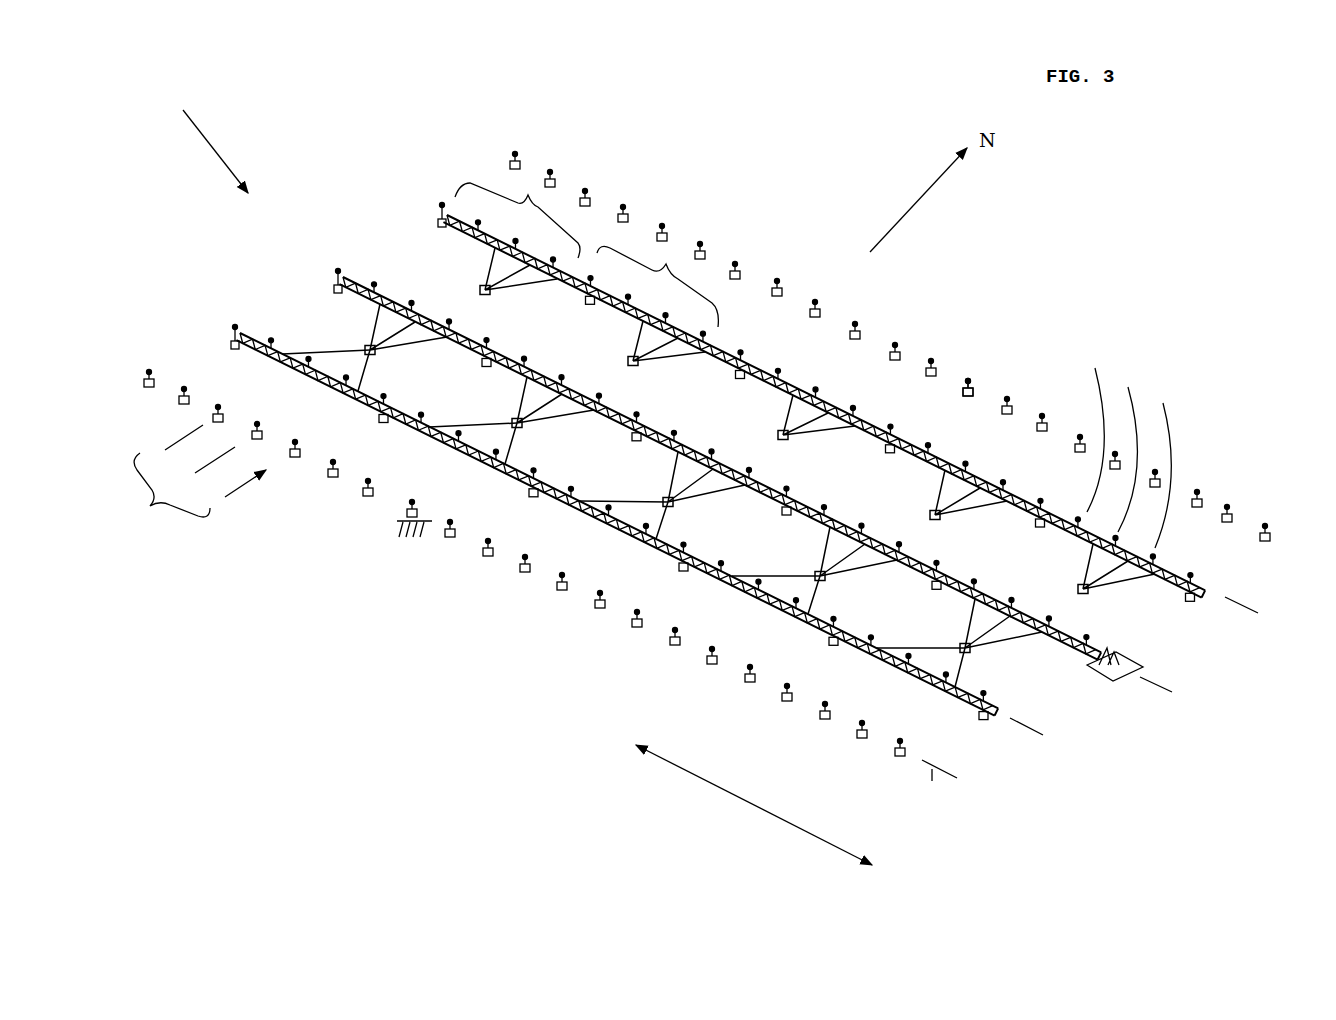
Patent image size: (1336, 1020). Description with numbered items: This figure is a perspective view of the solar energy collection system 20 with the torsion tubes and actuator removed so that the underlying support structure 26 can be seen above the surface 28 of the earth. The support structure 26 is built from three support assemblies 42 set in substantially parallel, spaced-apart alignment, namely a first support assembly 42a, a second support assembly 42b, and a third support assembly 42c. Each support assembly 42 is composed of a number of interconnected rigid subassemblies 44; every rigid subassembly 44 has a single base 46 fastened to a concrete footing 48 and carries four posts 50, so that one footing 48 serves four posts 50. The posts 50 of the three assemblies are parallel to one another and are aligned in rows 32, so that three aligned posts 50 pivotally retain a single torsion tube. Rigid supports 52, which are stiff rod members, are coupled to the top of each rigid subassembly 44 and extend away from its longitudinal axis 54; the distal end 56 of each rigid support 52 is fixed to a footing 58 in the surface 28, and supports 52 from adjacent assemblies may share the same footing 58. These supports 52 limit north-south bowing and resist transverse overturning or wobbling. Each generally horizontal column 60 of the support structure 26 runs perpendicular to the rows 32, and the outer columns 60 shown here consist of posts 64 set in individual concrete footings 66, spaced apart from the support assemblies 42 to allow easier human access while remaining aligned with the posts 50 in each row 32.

The solar energy collection system 20 is at (538, 749).
The support structure 26 is at (200, 135).
The surface 28 is at (398, 529).
The rows 32 is at (200, 486).
The support assemblies 42 is at (688, 410).
The first support assembly 42a is at (263, 333).
The second support assembly 42b is at (360, 300).
The third support assembly 42c is at (443, 200).
The rigid subassemblies 44 is at (527, 190).
The base 46 is at (840, 648).
The concrete footing 48 is at (230, 350).
The posts 50 is at (1131, 442).
The rigid supports 52 is at (407, 337).
The longitudinal axis 54 is at (700, 779).
The distal end 56 is at (662, 497).
The footing 58 is at (823, 585).
The columns 60 is at (1303, 553).
The posts 64 is at (968, 378).
The individual concrete footings 66 is at (970, 407).